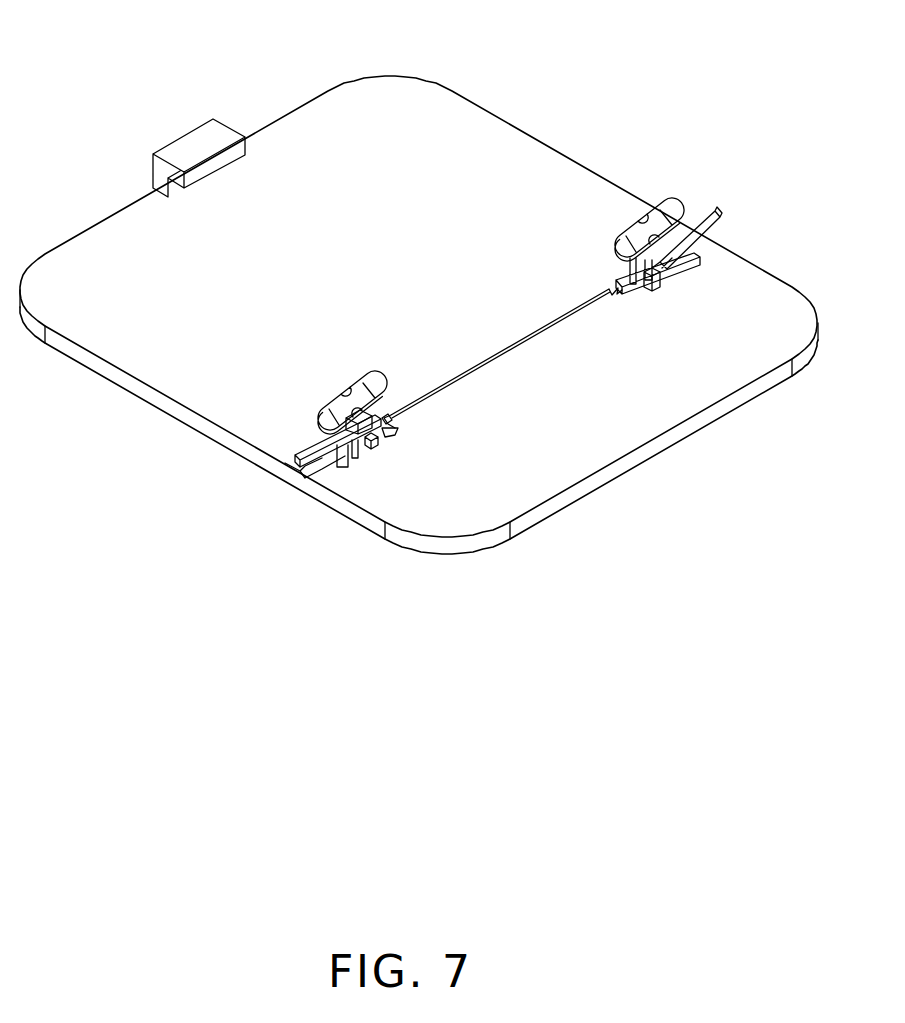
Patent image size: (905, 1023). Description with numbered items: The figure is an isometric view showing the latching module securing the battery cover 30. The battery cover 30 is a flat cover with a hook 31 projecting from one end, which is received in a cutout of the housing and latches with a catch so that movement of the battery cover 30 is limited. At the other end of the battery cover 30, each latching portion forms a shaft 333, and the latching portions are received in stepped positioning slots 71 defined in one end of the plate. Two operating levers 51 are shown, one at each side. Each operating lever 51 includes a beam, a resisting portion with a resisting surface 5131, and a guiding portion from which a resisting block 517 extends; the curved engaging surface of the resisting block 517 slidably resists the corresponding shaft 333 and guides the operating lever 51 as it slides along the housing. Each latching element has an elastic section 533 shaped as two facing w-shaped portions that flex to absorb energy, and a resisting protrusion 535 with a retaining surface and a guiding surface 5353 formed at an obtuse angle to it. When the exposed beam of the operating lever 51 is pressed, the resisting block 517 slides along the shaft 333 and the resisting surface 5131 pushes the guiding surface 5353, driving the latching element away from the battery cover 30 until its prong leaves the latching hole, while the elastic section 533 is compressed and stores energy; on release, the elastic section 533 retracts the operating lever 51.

The battery cover 30 is at (353, 110).
The hook 31 is at (197, 150).
The operating lever 51 is at (718, 228).
The stepped positioning slot 71 is at (647, 293).
The shaft 333 is at (684, 284).
The resisting block 517 is at (652, 293).
The elastic section 533 is at (668, 202).
The resisting protrusion 535 is at (388, 430).
The resisting surface 5131 is at (343, 452).
The guiding surface 5353 is at (358, 436).